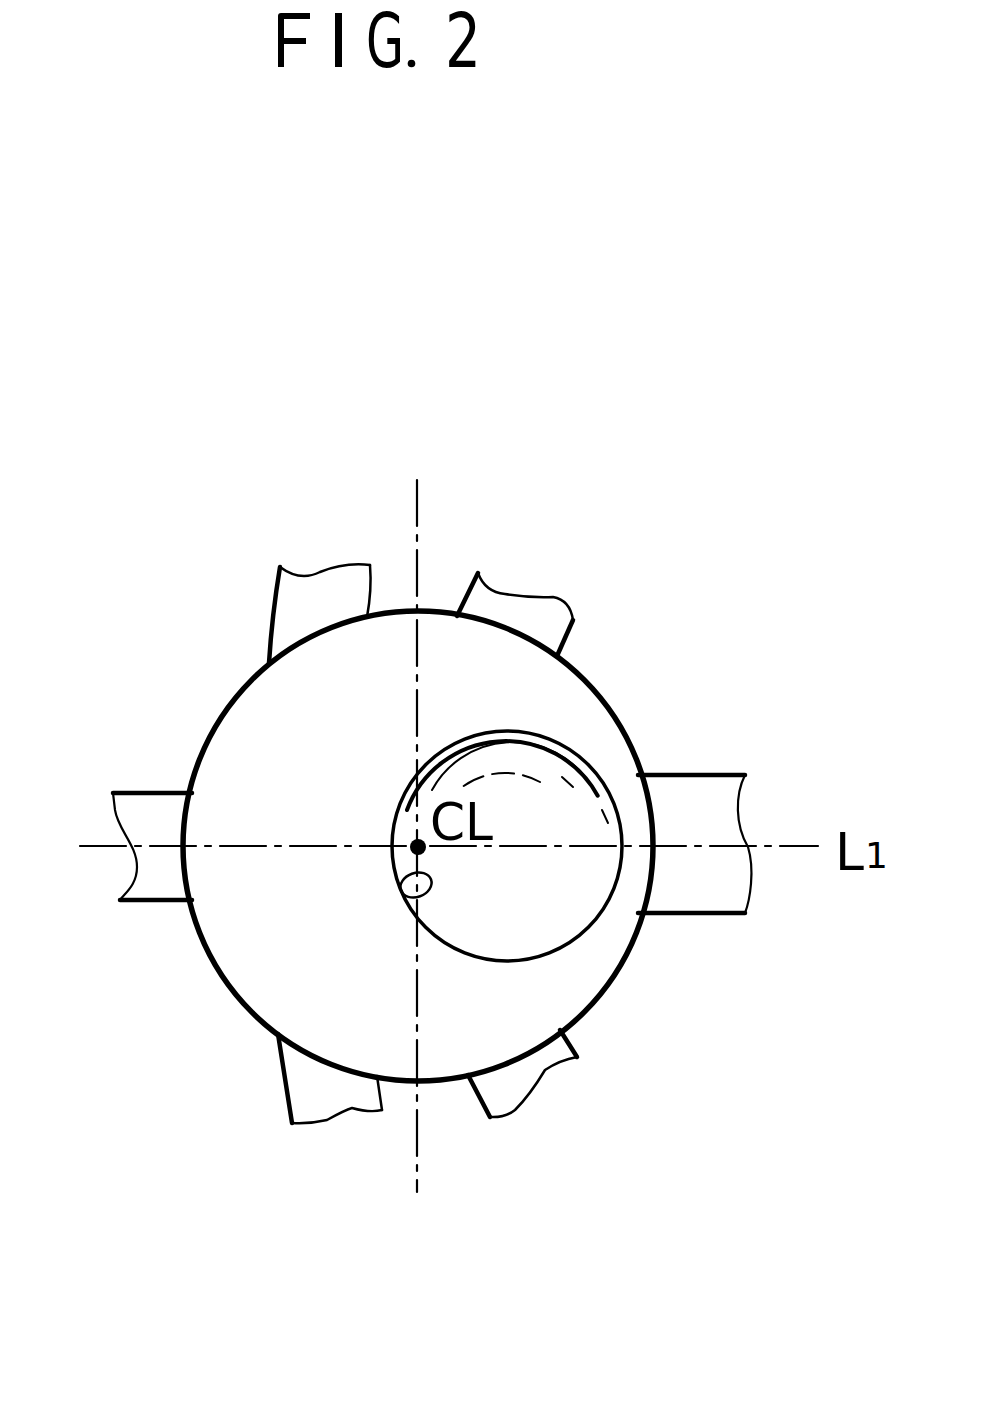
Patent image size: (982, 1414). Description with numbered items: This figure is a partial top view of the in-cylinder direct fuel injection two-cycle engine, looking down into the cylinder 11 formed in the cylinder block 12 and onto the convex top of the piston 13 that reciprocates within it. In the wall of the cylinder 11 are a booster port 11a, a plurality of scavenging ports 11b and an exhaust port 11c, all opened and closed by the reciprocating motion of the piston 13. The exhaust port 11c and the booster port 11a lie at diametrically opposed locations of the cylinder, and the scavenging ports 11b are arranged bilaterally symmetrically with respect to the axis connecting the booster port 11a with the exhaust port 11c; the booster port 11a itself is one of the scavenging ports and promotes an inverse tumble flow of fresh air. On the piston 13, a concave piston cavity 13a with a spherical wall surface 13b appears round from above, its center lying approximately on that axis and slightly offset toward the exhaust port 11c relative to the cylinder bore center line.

The cylinder 11 is at (215, 967).
The booster port 11a is at (143, 810).
The scavenging ports 11b is at (503, 603).
The exhaust port 11c is at (699, 793).
The cylinder block 12 is at (725, 607).
The piston 13 is at (333, 790).
The piston cavity 13a is at (568, 902).
The spherical wall surface 13b is at (410, 898).